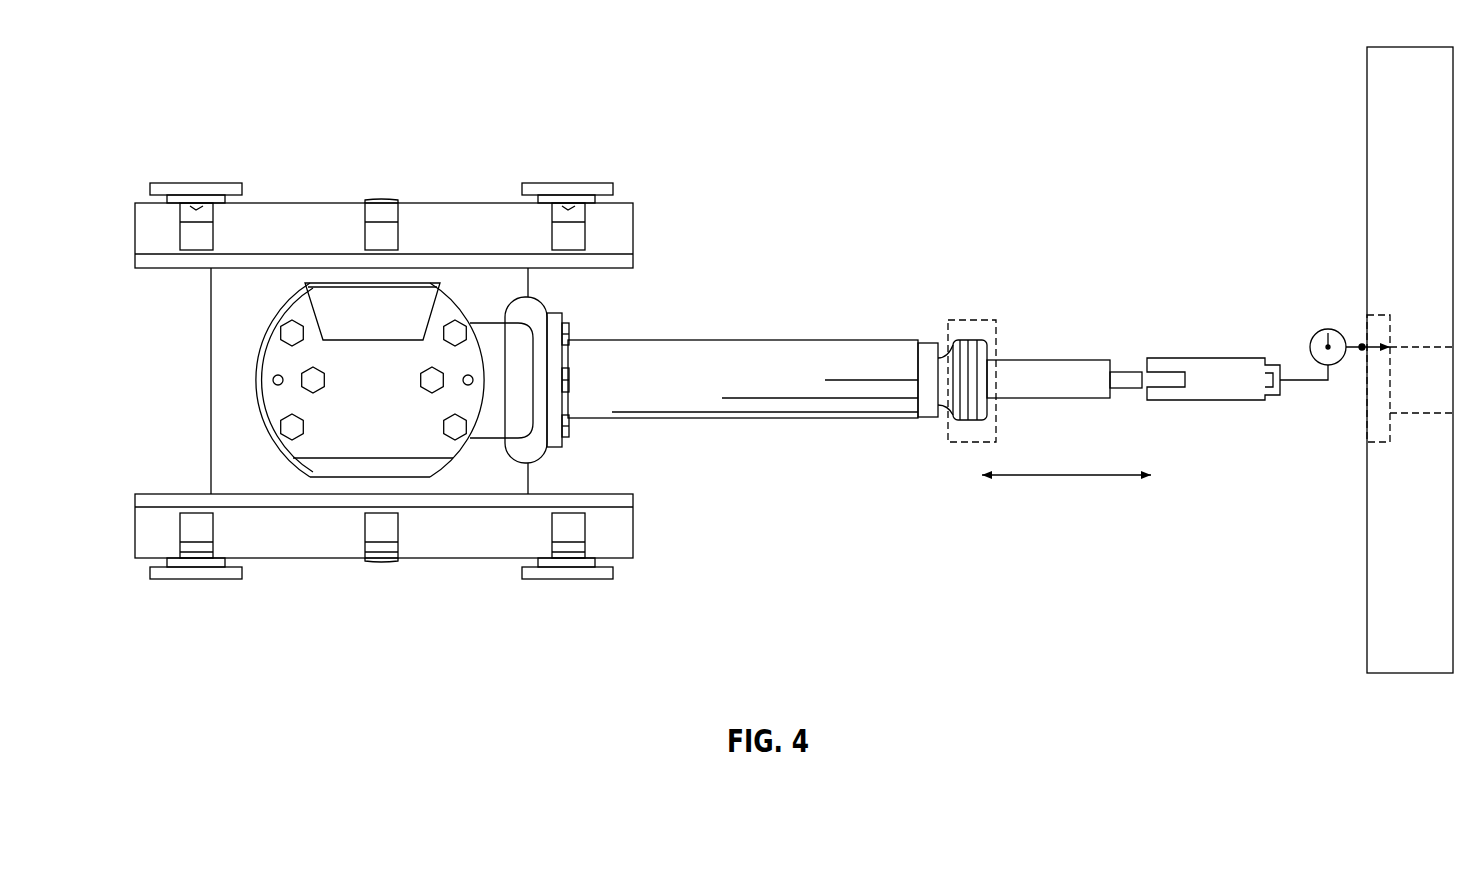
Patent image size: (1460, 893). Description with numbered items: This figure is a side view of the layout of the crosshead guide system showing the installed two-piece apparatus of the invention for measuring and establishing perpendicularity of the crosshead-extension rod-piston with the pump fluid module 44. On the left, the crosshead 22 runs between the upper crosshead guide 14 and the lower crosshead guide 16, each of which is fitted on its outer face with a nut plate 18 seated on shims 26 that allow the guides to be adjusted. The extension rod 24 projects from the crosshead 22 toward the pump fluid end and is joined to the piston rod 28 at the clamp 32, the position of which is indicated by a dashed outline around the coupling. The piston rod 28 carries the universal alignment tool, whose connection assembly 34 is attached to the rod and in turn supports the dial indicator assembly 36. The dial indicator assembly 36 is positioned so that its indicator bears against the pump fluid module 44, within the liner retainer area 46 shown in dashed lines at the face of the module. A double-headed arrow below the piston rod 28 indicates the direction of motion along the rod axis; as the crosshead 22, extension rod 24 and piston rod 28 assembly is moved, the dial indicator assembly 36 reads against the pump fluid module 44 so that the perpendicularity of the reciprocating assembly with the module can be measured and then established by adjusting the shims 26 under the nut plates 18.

The upper crosshead guide 14 is at (642, 231).
The lower crosshead guide 16 is at (638, 530).
The nut plate 18 is at (242, 177).
The crosshead 22 is at (207, 377).
The extension rod 24 is at (770, 334).
The shims 26 is at (154, 201).
The piston rod 28 is at (1046, 356).
The clamp 32 is at (966, 319).
The connection assembly 34 is at (1206, 356).
The dial indicator assembly 36 is at (1326, 329).
The pump fluid module 44 is at (1389, 117).
The liner retainer area 46 is at (1378, 440).